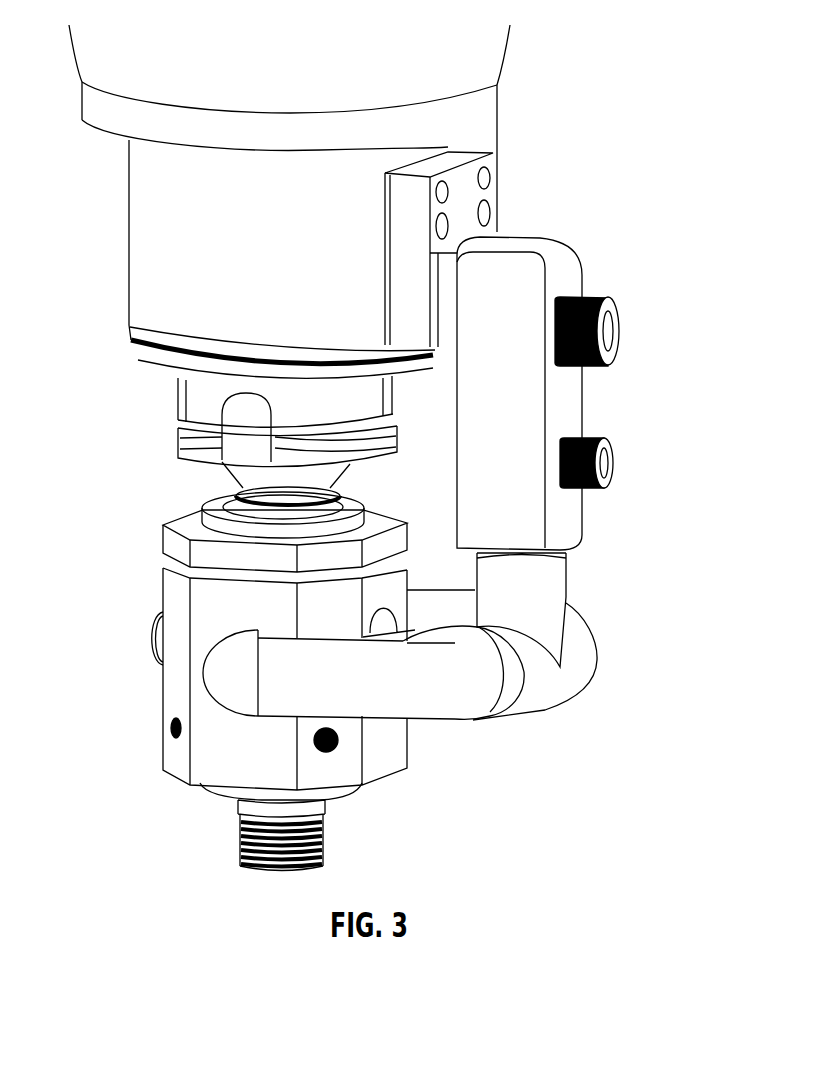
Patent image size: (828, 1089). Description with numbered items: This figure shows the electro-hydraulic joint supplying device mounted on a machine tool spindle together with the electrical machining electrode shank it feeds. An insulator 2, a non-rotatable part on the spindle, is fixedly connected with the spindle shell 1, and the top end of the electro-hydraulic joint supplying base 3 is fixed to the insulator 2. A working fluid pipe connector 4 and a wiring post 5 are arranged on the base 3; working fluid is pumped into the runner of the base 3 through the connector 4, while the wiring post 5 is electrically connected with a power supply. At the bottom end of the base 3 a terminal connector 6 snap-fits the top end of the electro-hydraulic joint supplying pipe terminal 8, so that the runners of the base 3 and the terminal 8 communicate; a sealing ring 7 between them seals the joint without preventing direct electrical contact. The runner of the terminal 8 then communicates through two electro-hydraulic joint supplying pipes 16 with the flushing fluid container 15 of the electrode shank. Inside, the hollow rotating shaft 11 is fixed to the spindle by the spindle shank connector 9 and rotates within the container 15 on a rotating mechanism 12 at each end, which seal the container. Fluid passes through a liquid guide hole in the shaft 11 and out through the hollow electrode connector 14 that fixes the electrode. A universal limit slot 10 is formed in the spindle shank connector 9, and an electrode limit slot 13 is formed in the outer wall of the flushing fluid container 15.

The spindle shell 1 is at (183, 222).
The insulator 2 is at (463, 203).
The electro-hydraulic joint supplying base 3 is at (533, 248).
The working fluid pipe connector 4 is at (604, 334).
The wiring post 5 is at (600, 465).
The terminal connector 6 is at (520, 535).
The sealing ring 7 is at (567, 555).
The electro-hydraulic joint supplying pipe terminal 8 is at (540, 597).
The spindle shank connector 9 is at (232, 383).
The universal limit slot 10 is at (240, 435).
The hollow rotating shaft 11 is at (240, 495).
The rotating mechanism 12 is at (240, 522).
The electrode limit slot 13 is at (260, 570).
The electrode connector 14 is at (320, 848).
The flushing fluid container 15 is at (202, 712).
The electro-hydraulic joint supplying pipe 16 is at (313, 672).